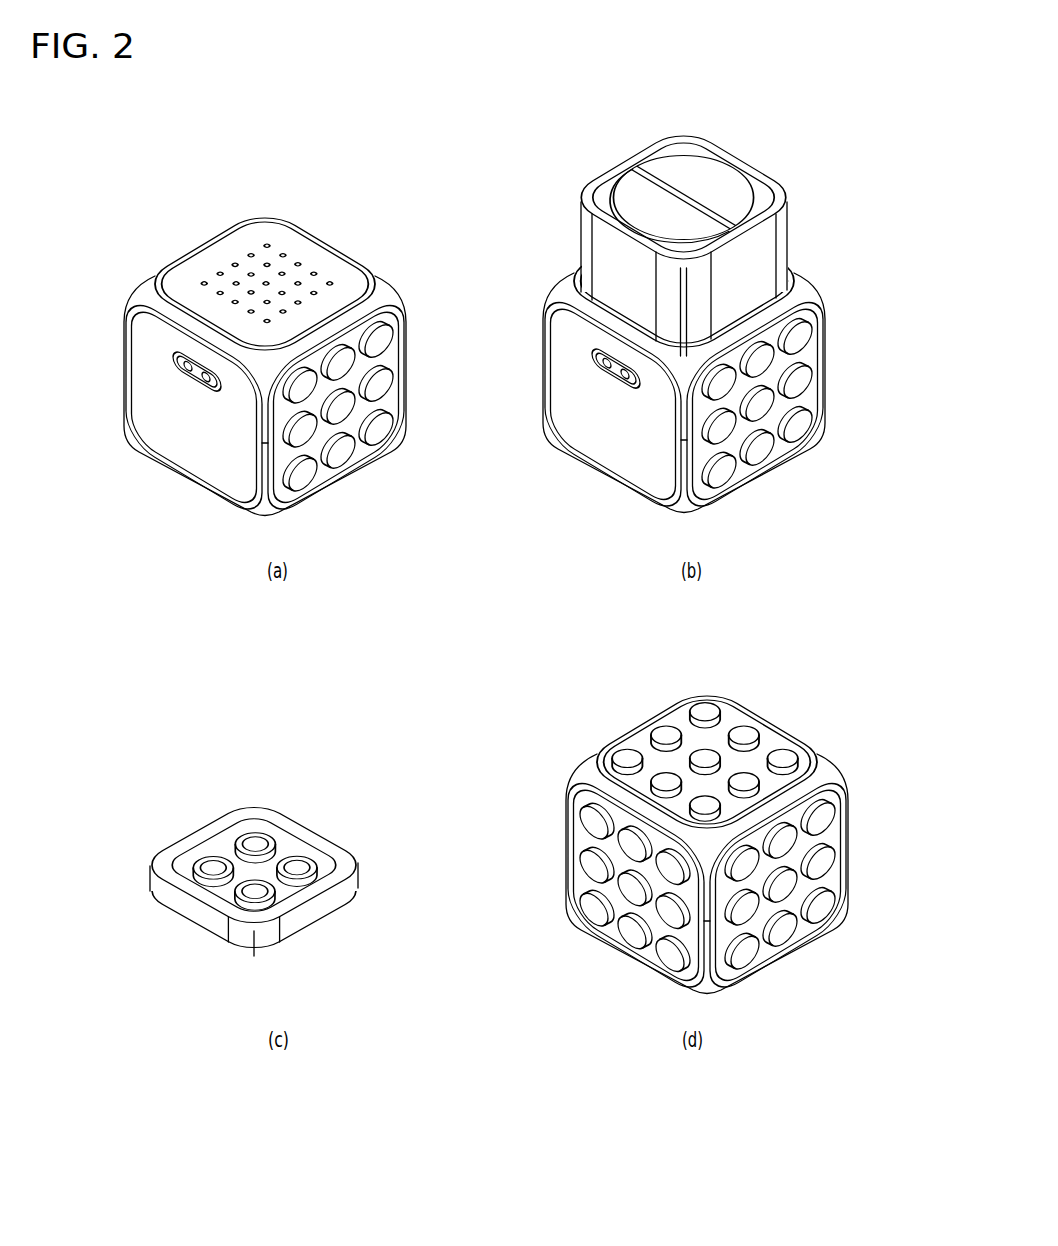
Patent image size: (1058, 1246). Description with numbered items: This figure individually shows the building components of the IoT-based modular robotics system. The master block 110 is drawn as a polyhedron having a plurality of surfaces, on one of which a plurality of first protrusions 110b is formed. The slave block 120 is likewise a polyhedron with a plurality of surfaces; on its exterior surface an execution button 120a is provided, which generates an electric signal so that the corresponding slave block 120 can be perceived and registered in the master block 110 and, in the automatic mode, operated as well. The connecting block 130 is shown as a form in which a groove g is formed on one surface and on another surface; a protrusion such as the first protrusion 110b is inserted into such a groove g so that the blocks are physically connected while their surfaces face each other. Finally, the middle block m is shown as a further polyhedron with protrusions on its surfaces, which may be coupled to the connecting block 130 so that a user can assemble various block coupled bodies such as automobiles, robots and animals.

The master block 110 is at (131, 147).
The first protrusion 110b is at (392, 437).
The slave block 120 is at (532, 148).
The execution button 120a is at (808, 437).
The connecting block 130 is at (133, 754).
The groove g is at (258, 836).
The middle block m is at (516, 699).